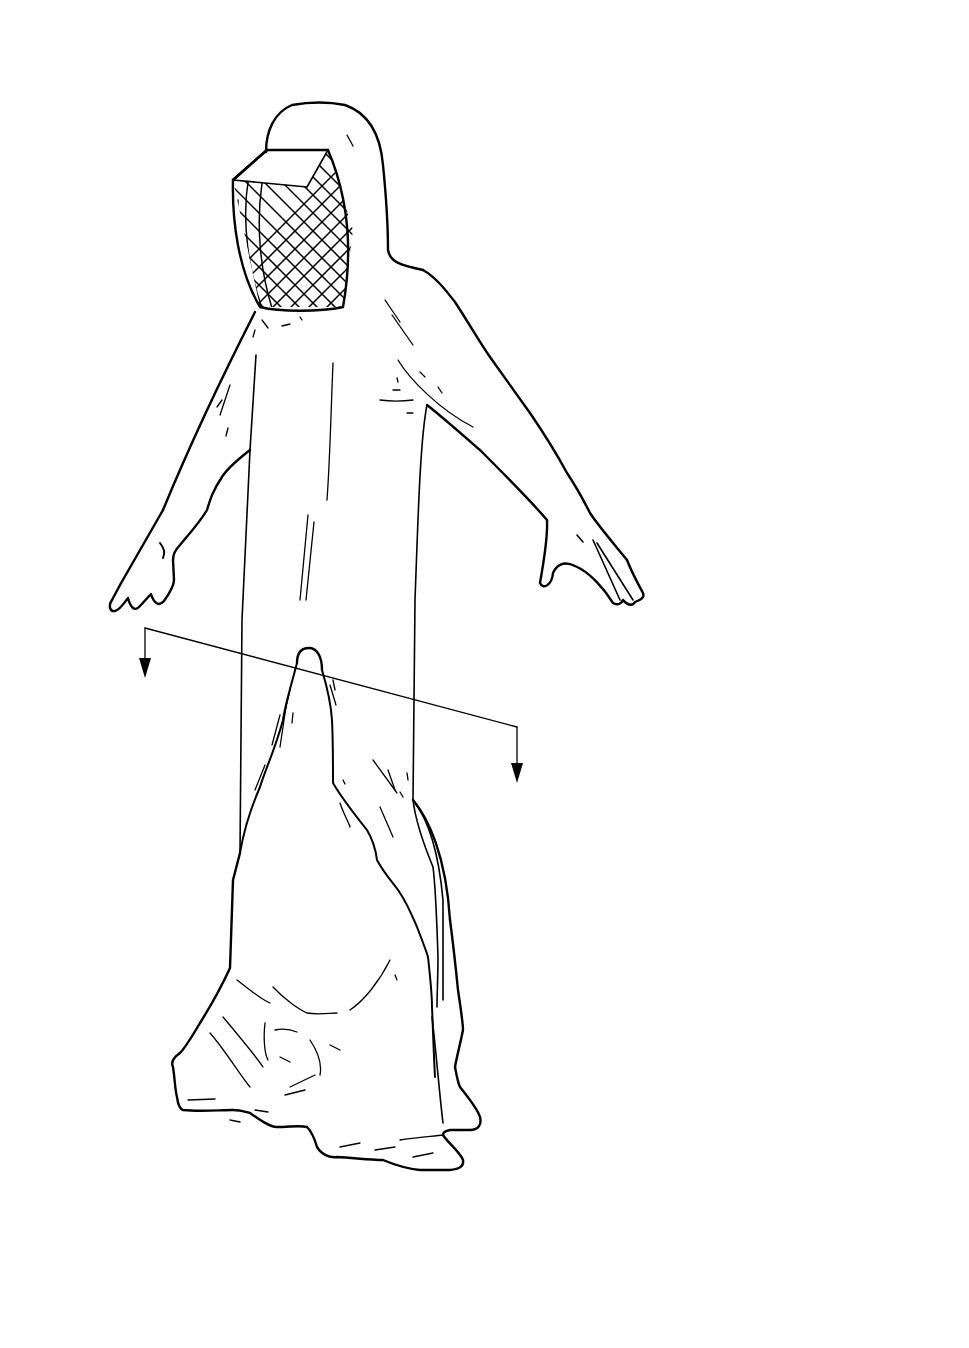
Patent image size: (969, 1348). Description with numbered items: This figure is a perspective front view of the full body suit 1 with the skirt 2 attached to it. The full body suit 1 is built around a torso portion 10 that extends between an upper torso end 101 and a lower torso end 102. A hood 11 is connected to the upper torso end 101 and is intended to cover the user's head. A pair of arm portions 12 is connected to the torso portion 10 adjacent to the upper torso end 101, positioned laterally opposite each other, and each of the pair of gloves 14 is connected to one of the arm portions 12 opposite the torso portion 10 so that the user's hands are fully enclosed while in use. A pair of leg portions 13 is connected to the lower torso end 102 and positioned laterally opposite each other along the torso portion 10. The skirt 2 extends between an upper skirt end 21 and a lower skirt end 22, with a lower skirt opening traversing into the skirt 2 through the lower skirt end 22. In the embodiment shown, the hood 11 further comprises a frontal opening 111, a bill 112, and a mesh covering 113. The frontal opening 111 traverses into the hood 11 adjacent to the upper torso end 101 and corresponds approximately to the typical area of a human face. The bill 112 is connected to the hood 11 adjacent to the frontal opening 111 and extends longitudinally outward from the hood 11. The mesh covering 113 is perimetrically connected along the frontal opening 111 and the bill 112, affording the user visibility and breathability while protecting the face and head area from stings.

The full body suit 1 is at (652, 732).
The skirt 2 is at (190, 943).
The torso portion 10 is at (287, 390).
The hood 11 is at (387, 68).
The pair of arm portions 12 is at (165, 415).
The pair of leg portions 13 is at (223, 738).
The pair of gloves 14 is at (100, 620).
The upper skirt end 21 is at (300, 637).
The lower skirt end 22 is at (182, 1130).
The upper torso end 101 is at (450, 238).
The lower torso end 102 is at (447, 630).
The frontal opening 111 is at (315, 302).
The bill 112 is at (262, 167).
The mesh covering 113 is at (233, 205).